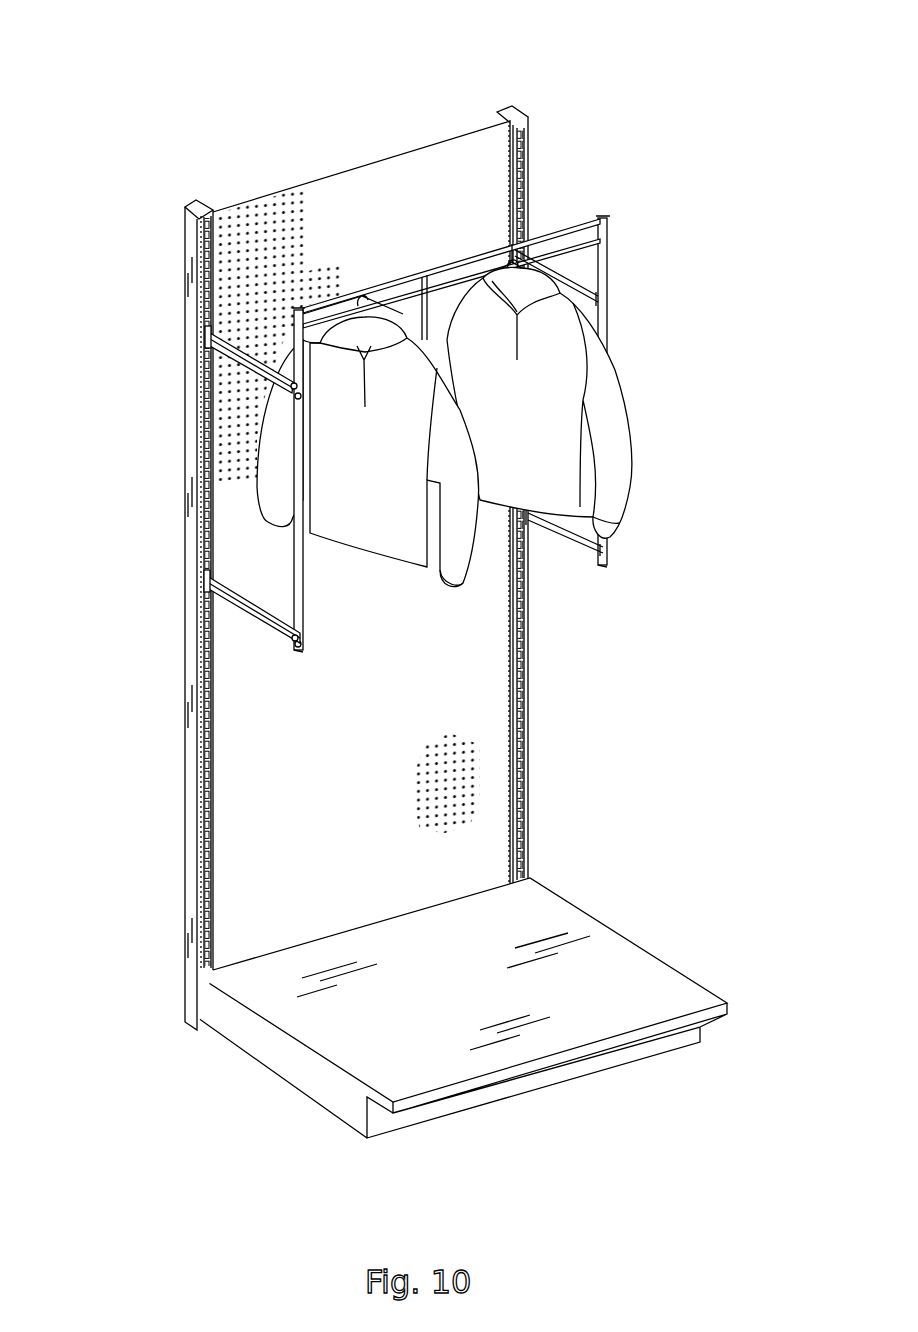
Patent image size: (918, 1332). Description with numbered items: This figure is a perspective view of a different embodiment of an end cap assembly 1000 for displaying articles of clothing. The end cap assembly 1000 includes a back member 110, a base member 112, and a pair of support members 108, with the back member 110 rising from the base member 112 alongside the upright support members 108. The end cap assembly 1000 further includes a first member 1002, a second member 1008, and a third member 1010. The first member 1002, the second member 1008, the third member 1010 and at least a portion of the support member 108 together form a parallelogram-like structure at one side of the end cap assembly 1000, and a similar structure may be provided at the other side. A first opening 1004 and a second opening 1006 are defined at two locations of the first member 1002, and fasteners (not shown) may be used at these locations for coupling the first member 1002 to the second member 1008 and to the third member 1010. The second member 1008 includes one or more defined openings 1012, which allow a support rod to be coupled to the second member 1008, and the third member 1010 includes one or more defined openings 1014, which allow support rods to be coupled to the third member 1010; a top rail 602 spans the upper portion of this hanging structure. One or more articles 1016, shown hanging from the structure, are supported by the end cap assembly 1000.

The end cap assembly 1000 is at (684, 116).
The support member 108 is at (188, 243).
The back member 110 is at (415, 229).
The base member 112 is at (630, 975).
The top rail 602 is at (581, 217).
The first member 1002 is at (305, 572).
The first opening 1004 is at (305, 399).
The second opening 1006 is at (306, 645).
The second member 1008 is at (245, 608).
The third member 1010 is at (243, 362).
The openings 1012 is at (213, 589).
The openings 1014 is at (223, 350).
The articles 1016 is at (410, 530).